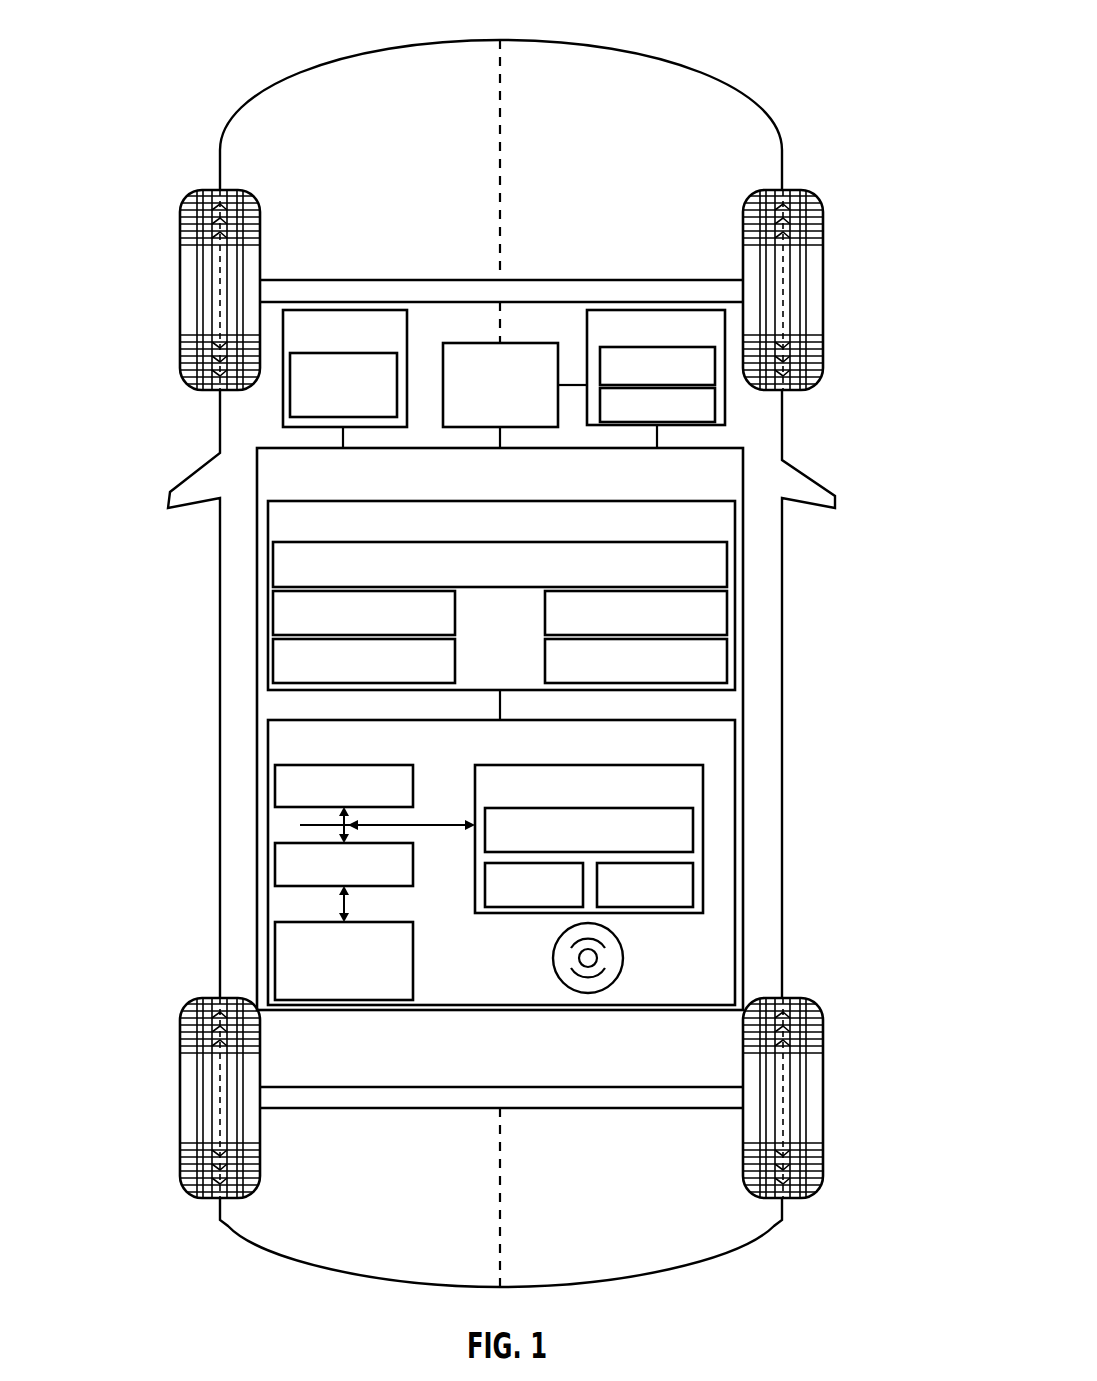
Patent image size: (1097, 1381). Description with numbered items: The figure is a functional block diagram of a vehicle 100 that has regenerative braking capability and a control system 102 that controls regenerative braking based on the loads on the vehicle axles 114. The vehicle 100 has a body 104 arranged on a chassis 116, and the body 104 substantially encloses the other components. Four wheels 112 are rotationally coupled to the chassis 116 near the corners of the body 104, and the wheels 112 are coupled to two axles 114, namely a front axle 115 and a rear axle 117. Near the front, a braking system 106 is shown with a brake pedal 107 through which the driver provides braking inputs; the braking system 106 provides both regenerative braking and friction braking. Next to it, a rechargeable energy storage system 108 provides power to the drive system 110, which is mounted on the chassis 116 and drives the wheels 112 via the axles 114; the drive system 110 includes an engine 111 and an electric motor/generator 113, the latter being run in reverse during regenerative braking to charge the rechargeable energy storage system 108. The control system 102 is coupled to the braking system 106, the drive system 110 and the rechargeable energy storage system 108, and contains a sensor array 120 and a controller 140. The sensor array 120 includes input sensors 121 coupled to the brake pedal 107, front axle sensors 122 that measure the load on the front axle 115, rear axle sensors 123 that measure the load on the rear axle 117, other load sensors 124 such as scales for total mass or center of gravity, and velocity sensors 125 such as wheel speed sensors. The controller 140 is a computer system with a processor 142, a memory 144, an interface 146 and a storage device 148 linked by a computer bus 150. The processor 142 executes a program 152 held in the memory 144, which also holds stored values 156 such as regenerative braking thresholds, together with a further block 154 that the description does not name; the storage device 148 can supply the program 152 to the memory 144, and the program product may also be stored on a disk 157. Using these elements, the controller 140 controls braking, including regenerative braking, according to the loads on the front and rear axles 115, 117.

The vehicle 100 is at (498, 643).
The control system 102 is at (746, 460).
The body 104 is at (220, 565).
The braking system 106 is at (303, 352).
The brake pedal 107 is at (290, 383).
The rechargeable energy storage system 108 is at (488, 343).
The drive system 110 is at (718, 346).
The engine 111 is at (715, 370).
The wheel 112 is at (180, 270).
The motor/generator 113 is at (715, 405).
The axle 114 is at (484, 668).
The front axle 115 is at (363, 290).
The chassis 116 is at (516, 146).
The rear axle 117 is at (355, 1100).
The sensor array 120 is at (268, 686).
The input sensor 121 is at (627, 542).
The front axle sensor 122 is at (273, 625).
The rear axle sensor 123 is at (273, 663).
The other load sensor 124 is at (545, 620).
The velocity sensor 125 is at (545, 663).
The controller 140 is at (268, 748).
The processor 142 is at (275, 787).
The memory 144 is at (703, 772).
The interface 146 is at (275, 868).
The storage device 148 is at (275, 942).
The computer bus 150 is at (300, 825).
The program 152 is at (693, 830).
The input device 154 is at (545, 908).
The stored values 156 is at (693, 885).
The disk 157 is at (622, 962).